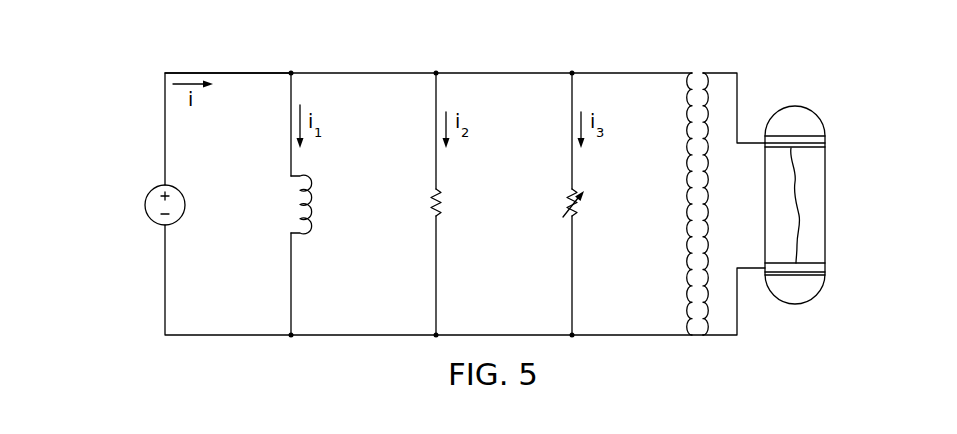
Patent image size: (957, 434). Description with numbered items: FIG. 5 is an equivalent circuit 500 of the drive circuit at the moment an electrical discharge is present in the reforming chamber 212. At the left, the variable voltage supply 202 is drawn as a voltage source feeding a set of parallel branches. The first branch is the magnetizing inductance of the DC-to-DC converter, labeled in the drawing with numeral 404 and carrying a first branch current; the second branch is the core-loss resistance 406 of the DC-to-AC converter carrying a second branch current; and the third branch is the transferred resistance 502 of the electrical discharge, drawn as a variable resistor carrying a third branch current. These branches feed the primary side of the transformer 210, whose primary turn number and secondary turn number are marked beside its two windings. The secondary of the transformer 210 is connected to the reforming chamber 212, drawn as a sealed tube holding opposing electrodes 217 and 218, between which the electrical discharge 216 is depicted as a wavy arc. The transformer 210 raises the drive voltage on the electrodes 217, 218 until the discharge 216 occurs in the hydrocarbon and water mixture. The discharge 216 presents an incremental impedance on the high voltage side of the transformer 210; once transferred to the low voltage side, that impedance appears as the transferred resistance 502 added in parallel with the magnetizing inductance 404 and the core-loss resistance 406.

The equivalent circuit 500 is at (242, 57).
The variable voltage supply 202 is at (152, 218).
The magnetizing inductance 404 is at (307, 212).
The core-loss resistance 406 is at (442, 205).
The transferred resistance of the electrical discharge 502 is at (579, 210).
The transformer 210 is at (698, 347).
The reforming chamber 212 is at (830, 205).
The electrode 217 is at (820, 142).
The electrical discharge 216 is at (801, 227).
The electrode 218 is at (820, 268).